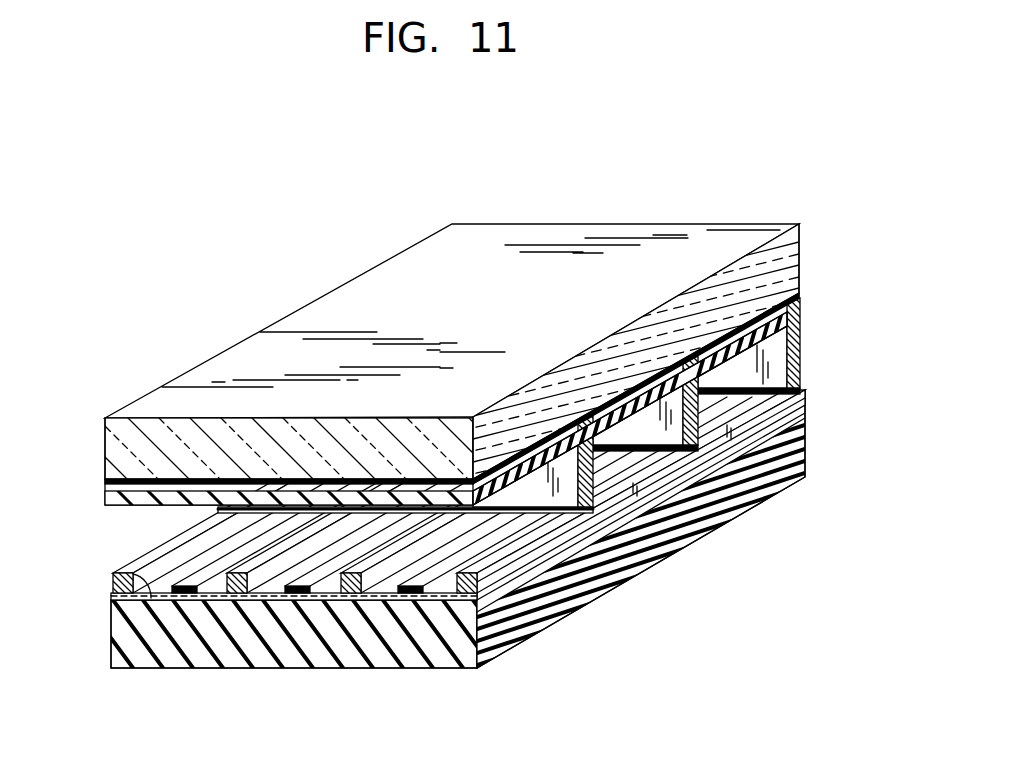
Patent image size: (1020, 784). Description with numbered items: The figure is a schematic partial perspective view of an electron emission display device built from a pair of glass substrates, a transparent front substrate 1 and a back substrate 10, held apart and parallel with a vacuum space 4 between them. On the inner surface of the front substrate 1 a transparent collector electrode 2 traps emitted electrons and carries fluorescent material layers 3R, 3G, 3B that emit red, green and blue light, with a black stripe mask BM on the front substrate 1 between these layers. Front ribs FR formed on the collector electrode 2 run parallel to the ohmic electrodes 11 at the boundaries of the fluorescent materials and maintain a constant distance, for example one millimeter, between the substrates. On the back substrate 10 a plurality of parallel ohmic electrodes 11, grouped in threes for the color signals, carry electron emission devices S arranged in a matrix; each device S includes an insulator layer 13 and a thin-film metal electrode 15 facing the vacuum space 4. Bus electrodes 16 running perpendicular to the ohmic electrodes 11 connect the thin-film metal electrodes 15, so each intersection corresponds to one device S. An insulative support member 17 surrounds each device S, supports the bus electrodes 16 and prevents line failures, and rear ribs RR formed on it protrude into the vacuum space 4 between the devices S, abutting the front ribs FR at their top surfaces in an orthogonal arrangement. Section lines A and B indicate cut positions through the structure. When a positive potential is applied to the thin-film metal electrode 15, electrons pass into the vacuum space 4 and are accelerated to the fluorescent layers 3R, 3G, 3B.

The front substrate 1 is at (697, 238).
The transparent collector electrode 2 is at (485, 370).
The fluorescent material layer (red) 3R is at (525, 457).
The fluorescent material layer (green) 3G is at (632, 396).
The fluorescent material layer (blue) 3B is at (728, 329).
The vacuum space 4 is at (155, 515).
The black stripe mask BM is at (800, 295).
The front rib FR is at (800, 349).
The rear rib RR is at (800, 391).
The back substrate 10 is at (469, 554).
The ohmic electrode 11 is at (667, 484).
The insulator layer 13 is at (113, 573).
The thin-film metal electrode 15 is at (467, 607).
The bus electrode 16 is at (299, 593).
The insulative support member 17 is at (721, 454).
The electron emission device S is at (552, 593).
The section line A- A is at (493, 242).
The section line B- B is at (333, 740).